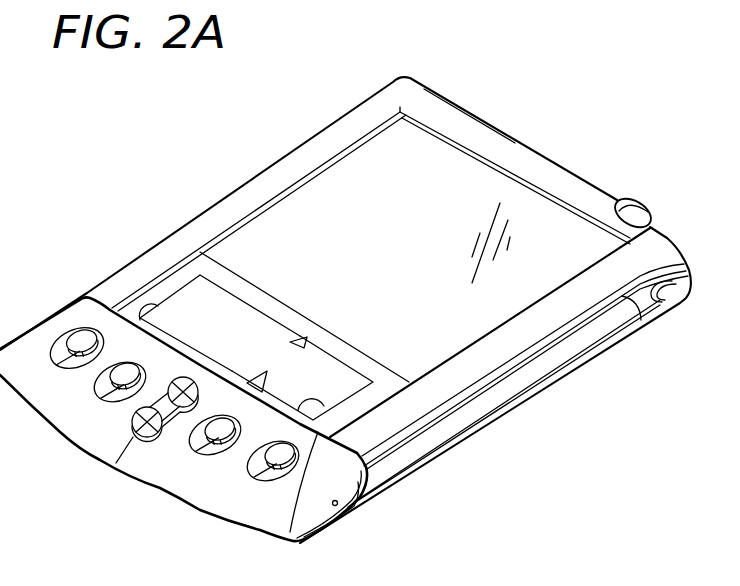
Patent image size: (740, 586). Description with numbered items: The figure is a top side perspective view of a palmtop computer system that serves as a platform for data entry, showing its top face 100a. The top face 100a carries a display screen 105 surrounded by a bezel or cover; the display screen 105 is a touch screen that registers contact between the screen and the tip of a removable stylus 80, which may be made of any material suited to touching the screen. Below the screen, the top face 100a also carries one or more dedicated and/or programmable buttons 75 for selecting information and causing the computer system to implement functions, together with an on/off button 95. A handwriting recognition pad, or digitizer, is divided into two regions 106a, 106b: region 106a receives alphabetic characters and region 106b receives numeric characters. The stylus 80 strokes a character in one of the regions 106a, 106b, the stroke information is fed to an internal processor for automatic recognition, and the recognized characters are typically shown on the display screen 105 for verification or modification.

The top face 100a is at (160, 101).
The buttons 75 is at (81, 341).
The stylus 80 is at (517, 388).
The on/off button 95 is at (645, 203).
The display screen 105 is at (420, 180).
The region 106a is at (233, 322).
The region 106b is at (313, 378).